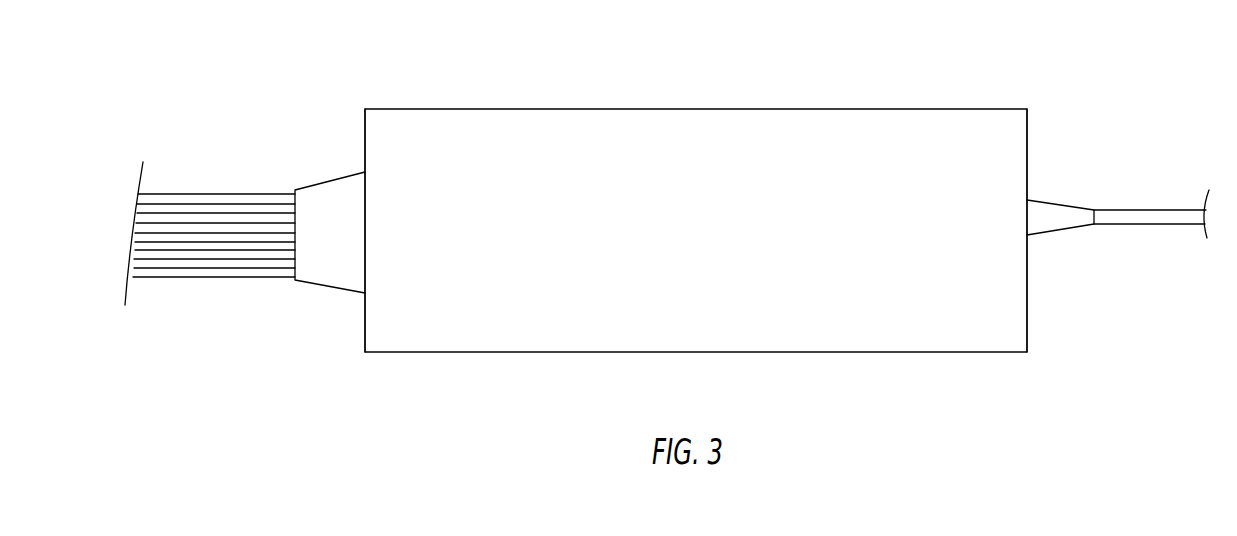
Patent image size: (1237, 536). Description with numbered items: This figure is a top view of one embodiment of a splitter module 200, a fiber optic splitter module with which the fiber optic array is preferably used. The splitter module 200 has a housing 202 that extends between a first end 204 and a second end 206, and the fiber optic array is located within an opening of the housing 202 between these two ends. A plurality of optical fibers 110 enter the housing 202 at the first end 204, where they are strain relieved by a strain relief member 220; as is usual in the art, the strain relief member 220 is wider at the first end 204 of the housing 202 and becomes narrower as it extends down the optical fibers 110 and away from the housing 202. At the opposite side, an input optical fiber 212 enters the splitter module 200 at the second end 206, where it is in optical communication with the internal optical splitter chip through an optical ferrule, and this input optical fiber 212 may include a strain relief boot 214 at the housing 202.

The splitter module 200 is at (984, 90).
The housing 202 is at (825, 352).
The first end 204 is at (363, 344).
The second end 206 is at (1027, 143).
The strain relief member 220 is at (318, 182).
The optical fibers 110 is at (220, 282).
The strain relief boot 214 is at (1073, 227).
The input optical fiber 212 is at (1153, 218).